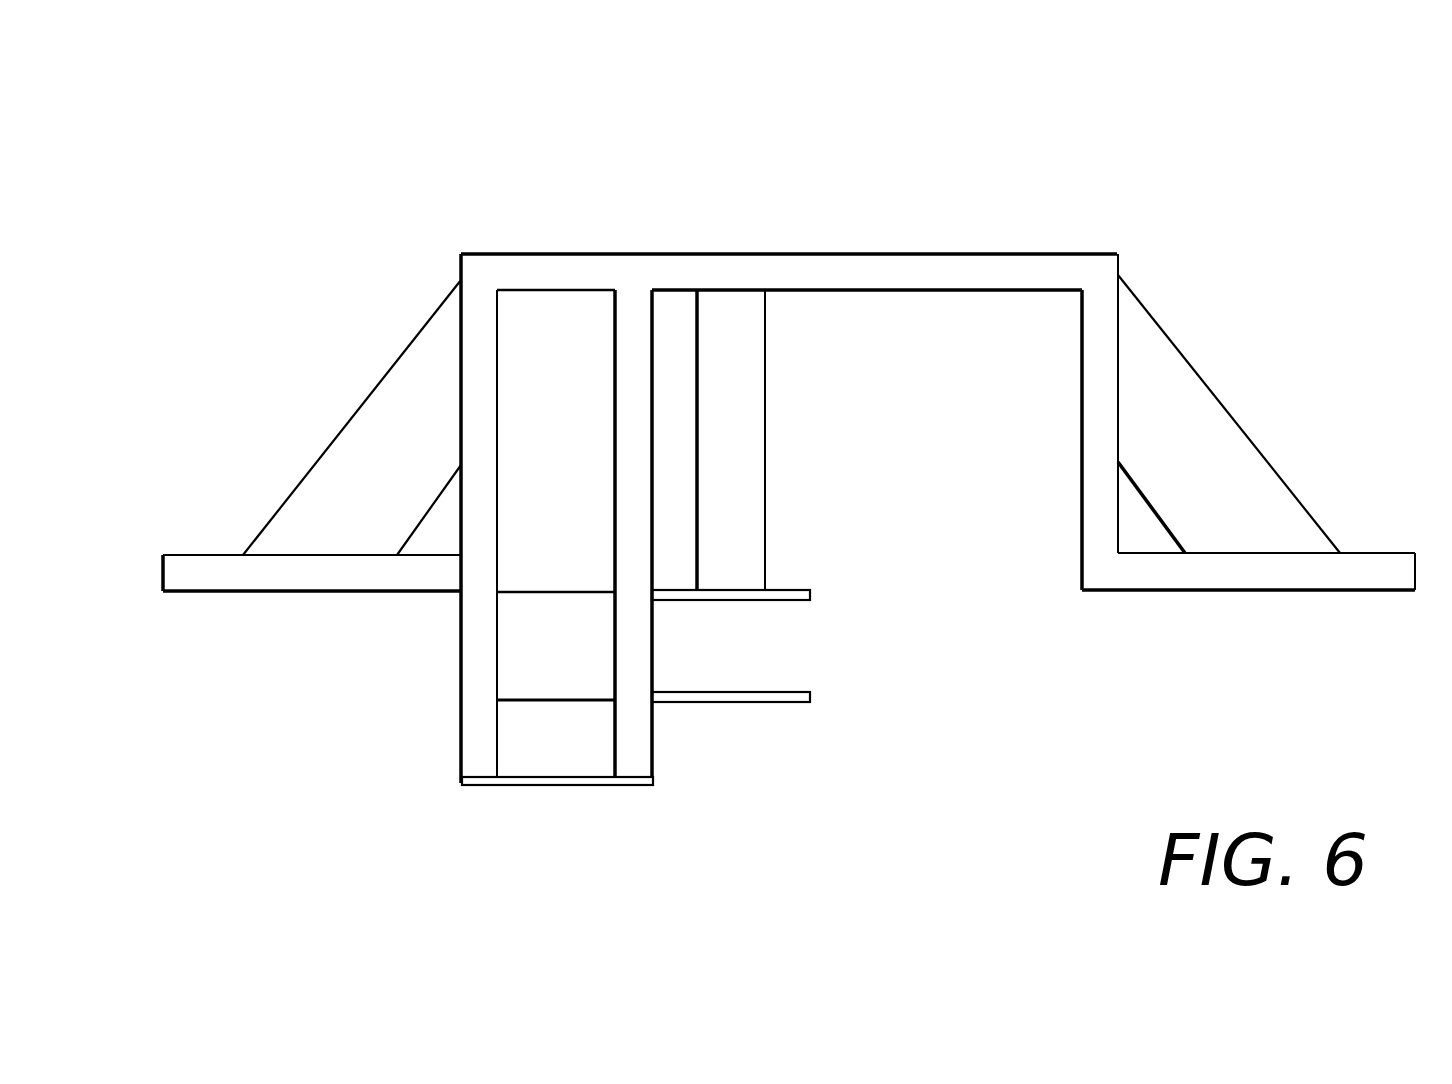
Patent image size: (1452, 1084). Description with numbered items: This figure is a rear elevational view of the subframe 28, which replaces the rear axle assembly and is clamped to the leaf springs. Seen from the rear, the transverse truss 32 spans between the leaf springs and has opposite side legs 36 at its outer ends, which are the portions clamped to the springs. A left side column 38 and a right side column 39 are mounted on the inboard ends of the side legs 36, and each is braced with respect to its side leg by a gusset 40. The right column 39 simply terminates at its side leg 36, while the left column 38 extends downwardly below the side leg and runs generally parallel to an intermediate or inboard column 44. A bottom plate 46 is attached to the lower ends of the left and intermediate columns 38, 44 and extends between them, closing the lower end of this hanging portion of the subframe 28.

The subframe 28 is at (366, 209).
The transverse truss 32 is at (1117, 254).
The side legs 36 is at (208, 554).
The left side column 38 is at (461, 657).
The right side column 39 is at (1082, 438).
The gussets 40 is at (402, 484).
The intermediate column 44 is at (653, 753).
The bottom plate 46 is at (558, 786).